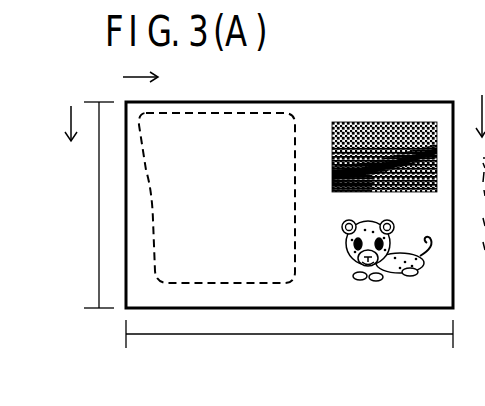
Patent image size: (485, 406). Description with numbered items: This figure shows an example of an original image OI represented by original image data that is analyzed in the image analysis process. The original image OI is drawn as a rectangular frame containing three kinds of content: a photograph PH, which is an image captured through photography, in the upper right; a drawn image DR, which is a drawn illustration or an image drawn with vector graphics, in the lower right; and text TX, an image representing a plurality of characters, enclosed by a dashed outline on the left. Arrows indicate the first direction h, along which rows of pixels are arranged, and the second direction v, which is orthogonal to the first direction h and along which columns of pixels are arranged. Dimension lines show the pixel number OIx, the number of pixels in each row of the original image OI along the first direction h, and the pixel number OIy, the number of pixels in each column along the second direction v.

The first direction h is at (147, 79).
The second direction v is at (275, 128).
The original image OI is at (398, 102).
The pixel number OIx is at (289, 343).
The pixel number OIy is at (92, 205).
The text TX is at (218, 113).
The photograph PH is at (370, 132).
The drawn image DR is at (372, 278).